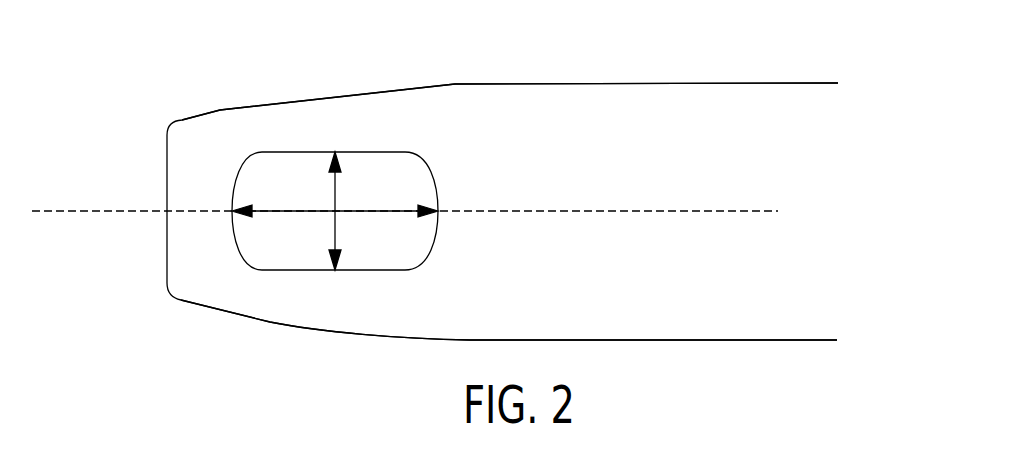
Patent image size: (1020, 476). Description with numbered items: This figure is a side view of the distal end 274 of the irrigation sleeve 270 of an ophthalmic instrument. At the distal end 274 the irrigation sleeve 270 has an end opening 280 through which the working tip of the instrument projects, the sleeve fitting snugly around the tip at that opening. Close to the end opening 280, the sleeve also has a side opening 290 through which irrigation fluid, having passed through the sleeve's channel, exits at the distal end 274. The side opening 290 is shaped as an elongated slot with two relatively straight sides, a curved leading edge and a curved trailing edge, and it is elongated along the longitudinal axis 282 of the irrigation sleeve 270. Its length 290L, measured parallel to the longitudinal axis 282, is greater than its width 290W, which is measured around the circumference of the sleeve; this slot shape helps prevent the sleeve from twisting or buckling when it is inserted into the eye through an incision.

The irrigation sleeve 270 is at (600, 82).
The distal end 274 is at (268, 323).
The end opening 280 is at (158, 149).
The longitudinal axis 282 is at (660, 208).
The side opening 290 is at (290, 270).
The length of the elongated slot 290L is at (273, 210).
The width of the elongated slot 290W is at (337, 192).